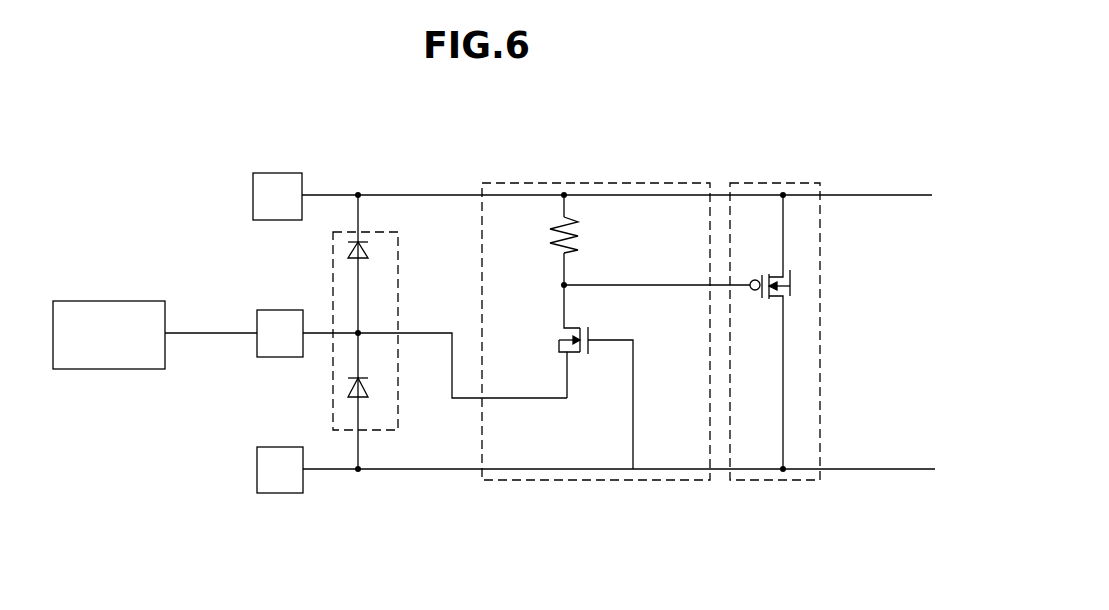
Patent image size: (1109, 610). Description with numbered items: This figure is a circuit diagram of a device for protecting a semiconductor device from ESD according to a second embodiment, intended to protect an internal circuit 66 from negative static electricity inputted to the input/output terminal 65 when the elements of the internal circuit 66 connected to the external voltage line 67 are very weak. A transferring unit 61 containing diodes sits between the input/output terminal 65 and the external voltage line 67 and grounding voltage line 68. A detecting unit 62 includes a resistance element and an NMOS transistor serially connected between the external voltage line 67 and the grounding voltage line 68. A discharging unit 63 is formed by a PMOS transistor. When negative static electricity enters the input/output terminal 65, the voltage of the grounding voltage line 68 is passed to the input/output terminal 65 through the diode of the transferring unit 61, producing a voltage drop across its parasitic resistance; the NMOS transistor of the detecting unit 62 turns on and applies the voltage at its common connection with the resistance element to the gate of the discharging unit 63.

The transferring unit 61 is at (398, 247).
The detecting unit 62 is at (537, 183).
The discharging unit 63 is at (775, 183).
The input/output terminal 65 is at (270, 357).
The internal circuit 66 is at (130, 369).
The external voltage line 67 is at (337, 195).
The grounding voltage line 68 is at (328, 471).